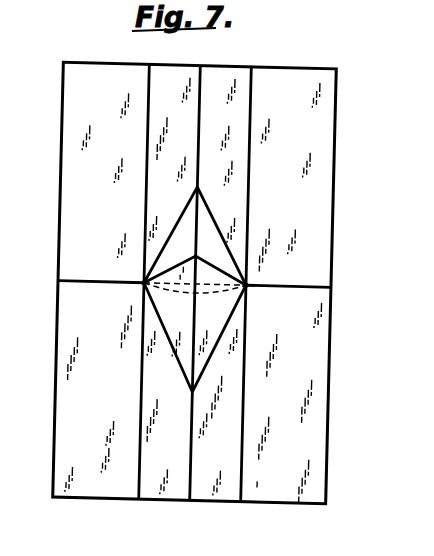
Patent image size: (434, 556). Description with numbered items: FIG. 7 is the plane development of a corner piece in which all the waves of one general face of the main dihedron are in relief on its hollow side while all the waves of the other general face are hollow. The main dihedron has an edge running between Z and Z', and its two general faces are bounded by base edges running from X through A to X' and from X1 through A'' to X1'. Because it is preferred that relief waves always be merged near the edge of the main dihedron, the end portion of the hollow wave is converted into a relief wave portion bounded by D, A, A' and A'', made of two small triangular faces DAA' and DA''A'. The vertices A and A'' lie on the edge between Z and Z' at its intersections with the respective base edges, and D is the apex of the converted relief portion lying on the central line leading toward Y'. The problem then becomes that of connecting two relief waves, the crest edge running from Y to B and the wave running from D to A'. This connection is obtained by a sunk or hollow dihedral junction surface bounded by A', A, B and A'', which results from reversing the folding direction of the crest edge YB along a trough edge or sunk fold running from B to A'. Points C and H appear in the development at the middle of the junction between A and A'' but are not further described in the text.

The base edge point X is at (133, 173).
The base edge point X' is at (128, 392).
The crest edge end Y is at (196, 161).
The crest edge end Y' is at (193, 410).
The base edge point X1 is at (254, 163).
The base edge point X1' is at (247, 413).
The main dihedron edge end Z is at (101, 268).
The main dihedron edge end Z' is at (289, 271).
The vertex A is at (135, 297).
The vertex A' is at (195, 258).
The vertex A'' is at (259, 298).
The crest edge end B is at (196, 223).
The point C on arc C is at (194, 301).
The relief wave vertex D is at (193, 350).
The point H, foot on axis H is at (195, 275).